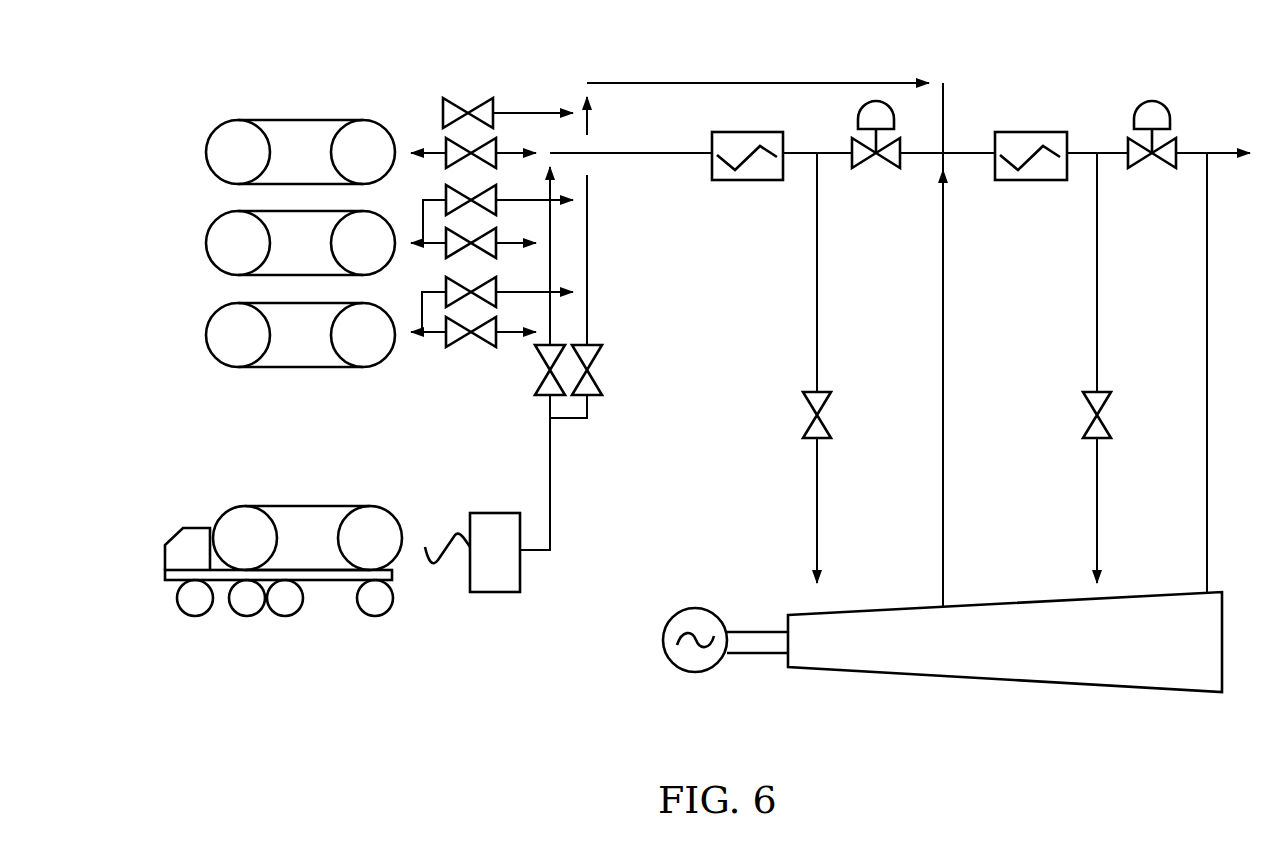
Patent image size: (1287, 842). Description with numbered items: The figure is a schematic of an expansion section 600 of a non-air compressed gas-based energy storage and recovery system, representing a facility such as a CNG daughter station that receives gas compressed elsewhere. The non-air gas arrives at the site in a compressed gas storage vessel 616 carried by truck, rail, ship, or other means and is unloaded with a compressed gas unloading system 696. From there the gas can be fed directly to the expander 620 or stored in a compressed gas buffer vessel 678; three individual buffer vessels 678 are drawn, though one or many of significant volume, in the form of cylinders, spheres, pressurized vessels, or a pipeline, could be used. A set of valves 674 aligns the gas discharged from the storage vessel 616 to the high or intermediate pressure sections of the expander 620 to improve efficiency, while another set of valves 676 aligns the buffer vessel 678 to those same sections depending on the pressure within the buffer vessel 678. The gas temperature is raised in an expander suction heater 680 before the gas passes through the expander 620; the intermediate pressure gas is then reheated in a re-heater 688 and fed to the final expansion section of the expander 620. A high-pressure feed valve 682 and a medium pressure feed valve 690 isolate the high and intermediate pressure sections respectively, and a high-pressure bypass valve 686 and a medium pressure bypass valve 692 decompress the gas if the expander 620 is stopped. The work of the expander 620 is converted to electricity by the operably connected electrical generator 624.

The expansion section 600 is at (1112, 78).
The compressed gas storage vessel 616 is at (303, 505).
The expander 620 is at (960, 676).
The electrical generator 624 is at (690, 674).
The set of valves 674 is at (540, 360).
The set of valves 676 is at (446, 197).
The compressed gas buffer vessel 678 is at (206, 153).
The expander suction heater 680 is at (745, 182).
The high-pressure feed valve 682 is at (806, 440).
The high-pressure bypass valve 686 is at (886, 168).
The re-heater 688 is at (1030, 182).
The medium pressure feed valve 690 is at (1086, 440).
The medium pressure bypass valve 692 is at (1161, 168).
The compressed gas unloading system 696 is at (493, 594).